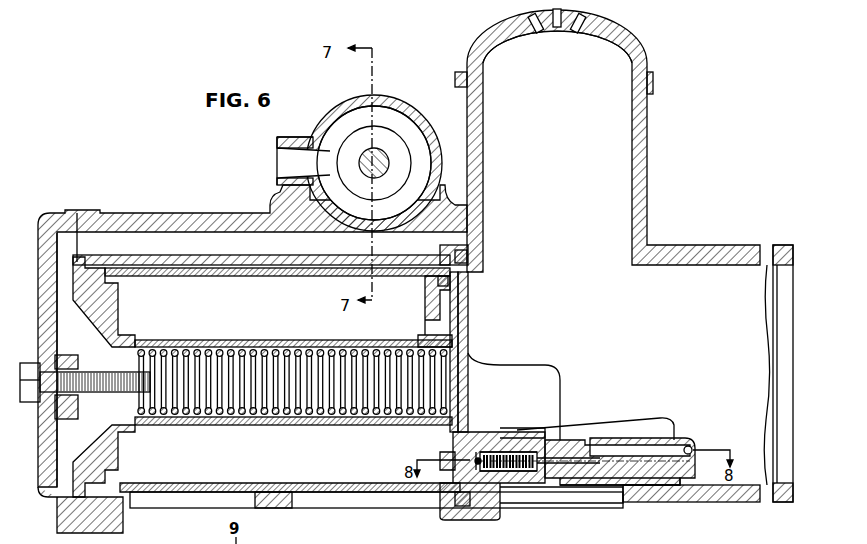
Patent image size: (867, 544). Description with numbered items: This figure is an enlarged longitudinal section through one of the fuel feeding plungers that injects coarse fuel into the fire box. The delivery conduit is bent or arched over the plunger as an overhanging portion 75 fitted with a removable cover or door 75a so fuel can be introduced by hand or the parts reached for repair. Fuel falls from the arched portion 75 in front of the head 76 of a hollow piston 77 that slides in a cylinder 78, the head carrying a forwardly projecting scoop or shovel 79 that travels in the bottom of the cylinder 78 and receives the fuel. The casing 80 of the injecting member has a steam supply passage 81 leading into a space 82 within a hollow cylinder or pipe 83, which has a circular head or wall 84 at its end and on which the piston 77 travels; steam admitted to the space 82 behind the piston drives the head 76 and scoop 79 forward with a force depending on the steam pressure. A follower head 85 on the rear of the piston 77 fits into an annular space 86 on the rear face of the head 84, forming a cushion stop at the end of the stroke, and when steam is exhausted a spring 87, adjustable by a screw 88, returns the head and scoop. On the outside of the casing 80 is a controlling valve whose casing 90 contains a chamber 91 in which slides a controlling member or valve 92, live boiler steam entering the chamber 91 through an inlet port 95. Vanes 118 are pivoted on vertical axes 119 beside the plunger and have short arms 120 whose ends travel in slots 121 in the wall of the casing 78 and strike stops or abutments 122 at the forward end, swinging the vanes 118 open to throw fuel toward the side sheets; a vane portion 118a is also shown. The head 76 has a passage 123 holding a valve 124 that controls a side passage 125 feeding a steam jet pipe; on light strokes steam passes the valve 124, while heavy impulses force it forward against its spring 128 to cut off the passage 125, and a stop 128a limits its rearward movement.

The arched overhanging portion of the delivery conduit 75 is at (607, 140).
The removable cover or door 75a is at (636, 46).
The head of the hollow piston 76 is at (467, 362).
The hollow piston 77 is at (300, 277).
The cylinder 78 is at (470, 266).
The scoop or shovel 79 is at (690, 447).
The casing of the fuel injecting member 80 is at (166, 224).
The steam supply passage 81 is at (261, 248).
The space within the hollow cylinder 82 is at (200, 425).
The hollow cylinder or pipe 83 is at (293, 371).
The circular head or wall 84 is at (458, 313).
The follower head 85 is at (113, 307).
The annular space 86 is at (439, 306).
The spring 87 is at (296, 340).
The adjusting screw 88 is at (112, 371).
The controlling valve casing 90 is at (380, 95).
The hollow space or chamber 91 is at (420, 150).
The controlling member or valve 92 is at (392, 138).
The inlet valve or port 95 is at (290, 165).
The vane 118 is at (648, 425).
The lever arm 118a is at (738, 534).
The vertical axis 119 is at (508, 416).
The short arm 120 is at (177, 540).
The groove or slot 121 is at (426, 540).
The stop or abutment 122 is at (676, 539).
The passage in the piston head 123 is at (455, 452).
The valve 124 is at (510, 480).
The side passage 125 is at (530, 437).
The spring 128 is at (500, 475).
The stop 128a is at (478, 457).